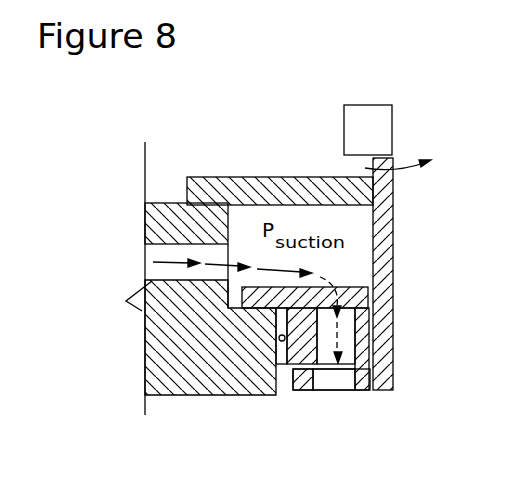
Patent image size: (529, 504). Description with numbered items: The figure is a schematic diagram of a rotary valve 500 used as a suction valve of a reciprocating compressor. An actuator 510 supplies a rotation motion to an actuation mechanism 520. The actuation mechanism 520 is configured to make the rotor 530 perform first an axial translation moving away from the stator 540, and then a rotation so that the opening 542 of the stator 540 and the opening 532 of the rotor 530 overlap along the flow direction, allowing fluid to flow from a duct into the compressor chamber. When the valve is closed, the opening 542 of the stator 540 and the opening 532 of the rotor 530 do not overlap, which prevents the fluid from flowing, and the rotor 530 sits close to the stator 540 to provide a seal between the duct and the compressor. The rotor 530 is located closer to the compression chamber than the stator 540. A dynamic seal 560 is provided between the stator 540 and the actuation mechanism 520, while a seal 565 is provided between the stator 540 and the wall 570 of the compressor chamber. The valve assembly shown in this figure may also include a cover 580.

The rotary valve 500 is at (427, 82).
The actuator 510 is at (378, 131).
The actuation mechanism 520 is at (393, 278).
The rotor 530 is at (302, 381).
The opening of the rotor 532 is at (340, 381).
The stator 540 is at (282, 341).
The opening of the stator 542 is at (325, 352).
The dynamic seal 560 is at (153, 251).
The seal 565 is at (279, 339).
The wall of the compressor chamber 570 is at (142, 326).
The cover 580 is at (208, 177).